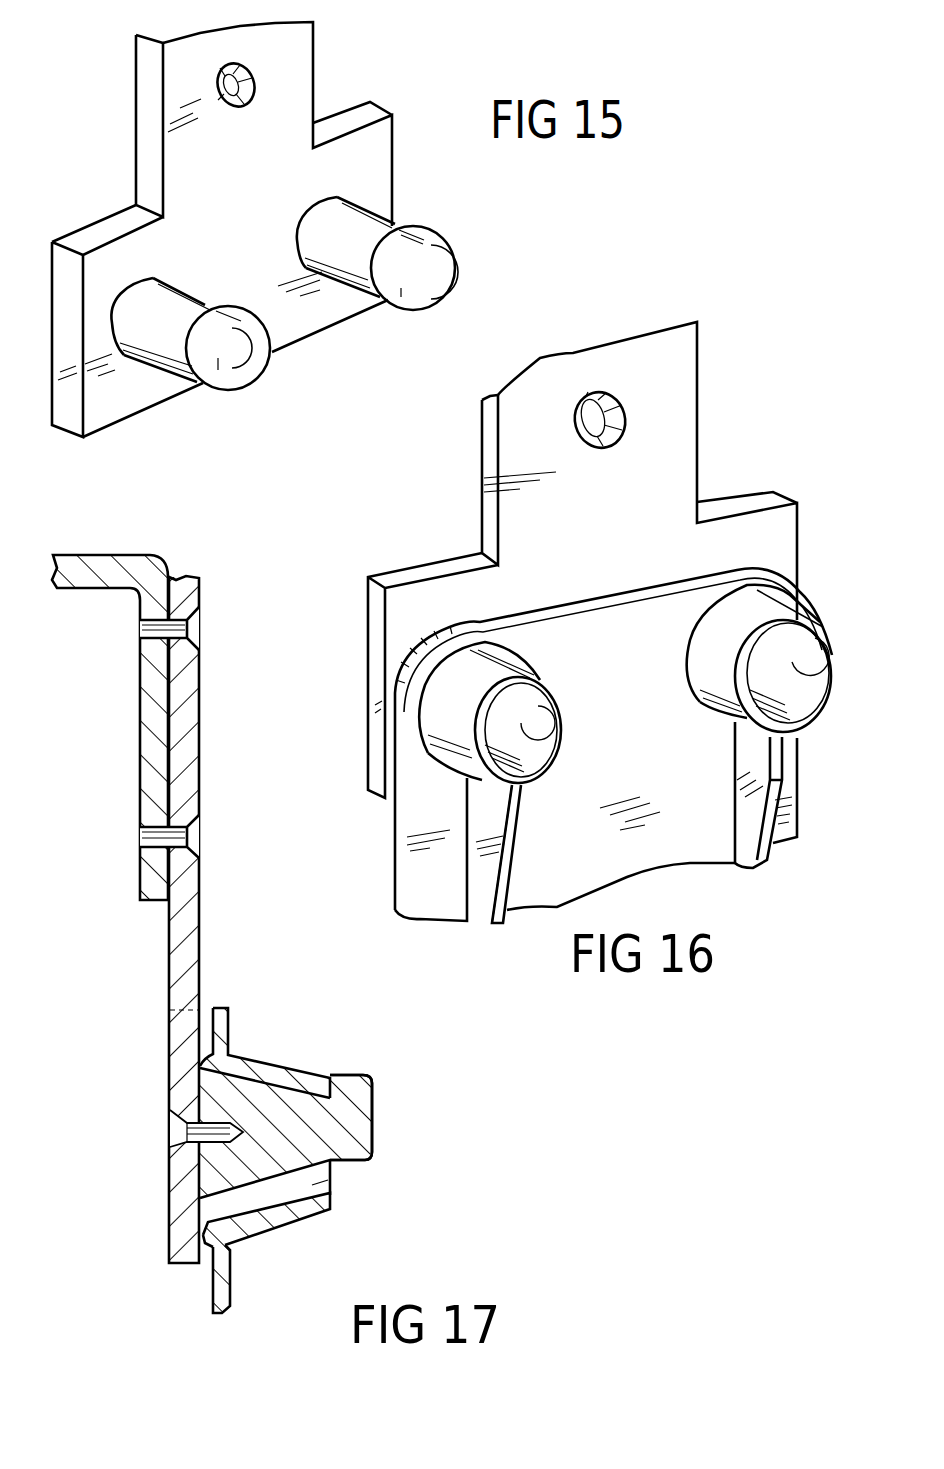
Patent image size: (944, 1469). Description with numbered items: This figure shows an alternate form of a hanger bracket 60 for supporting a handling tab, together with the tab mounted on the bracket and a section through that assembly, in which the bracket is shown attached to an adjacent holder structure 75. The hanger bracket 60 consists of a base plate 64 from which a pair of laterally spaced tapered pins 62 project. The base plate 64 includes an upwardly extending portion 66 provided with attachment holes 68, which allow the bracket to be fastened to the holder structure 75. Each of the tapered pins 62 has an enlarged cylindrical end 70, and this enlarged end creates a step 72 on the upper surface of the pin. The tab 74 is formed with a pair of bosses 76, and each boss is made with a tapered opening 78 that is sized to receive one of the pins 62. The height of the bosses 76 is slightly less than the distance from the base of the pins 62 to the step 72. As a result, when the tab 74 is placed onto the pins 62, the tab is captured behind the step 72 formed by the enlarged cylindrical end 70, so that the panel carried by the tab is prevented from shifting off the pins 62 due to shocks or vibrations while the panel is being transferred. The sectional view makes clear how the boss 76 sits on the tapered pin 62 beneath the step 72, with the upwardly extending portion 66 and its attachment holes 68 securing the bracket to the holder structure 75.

In FIG. 15, the hanger bracket 60 is at (393, 137).
In FIG. 16, the hanger bracket 60 is at (440, 558).
In FIG. 15, the tapered pins 62 is at (363, 220).
In FIG. 16, the tapered pins 62 is at (545, 709).
In FIG. 17, the tapered pins 62 is at (253, 1106).
In FIG. 15, the base plate 64 is at (58, 267).
In FIG. 15, the upwardly extending portion 66 is at (143, 103).
In FIG. 16, the upwardly extending portion 66 is at (492, 463).
In FIG. 17, the upwardly extending portion 66 is at (198, 745).
In FIG. 15, the attachment holes 68 is at (247, 97).
In FIG. 16, the attachment holes 68 is at (613, 425).
In FIG. 17, the attachment holes 68 is at (188, 622).
In FIG. 15, the enlarged cylindrical end 70 is at (420, 287).
In FIG. 16, the enlarged cylindrical end 70 is at (543, 738).
In FIG. 17, the enlarged cylindrical end 70 is at (377, 1117).
In FIG. 17, the step 72 is at (328, 1075).
In FIG. 16, the tab 74 is at (395, 868).
In FIG. 17, the tab 74 is at (230, 1275).
In FIG. 17, the support bracket 75 is at (138, 527).
In FIG. 16, the bosses 76 is at (467, 667).
In FIG. 17, the bosses 76 is at (327, 1205).
In FIG. 17, the tapered openings 78 is at (330, 1180).